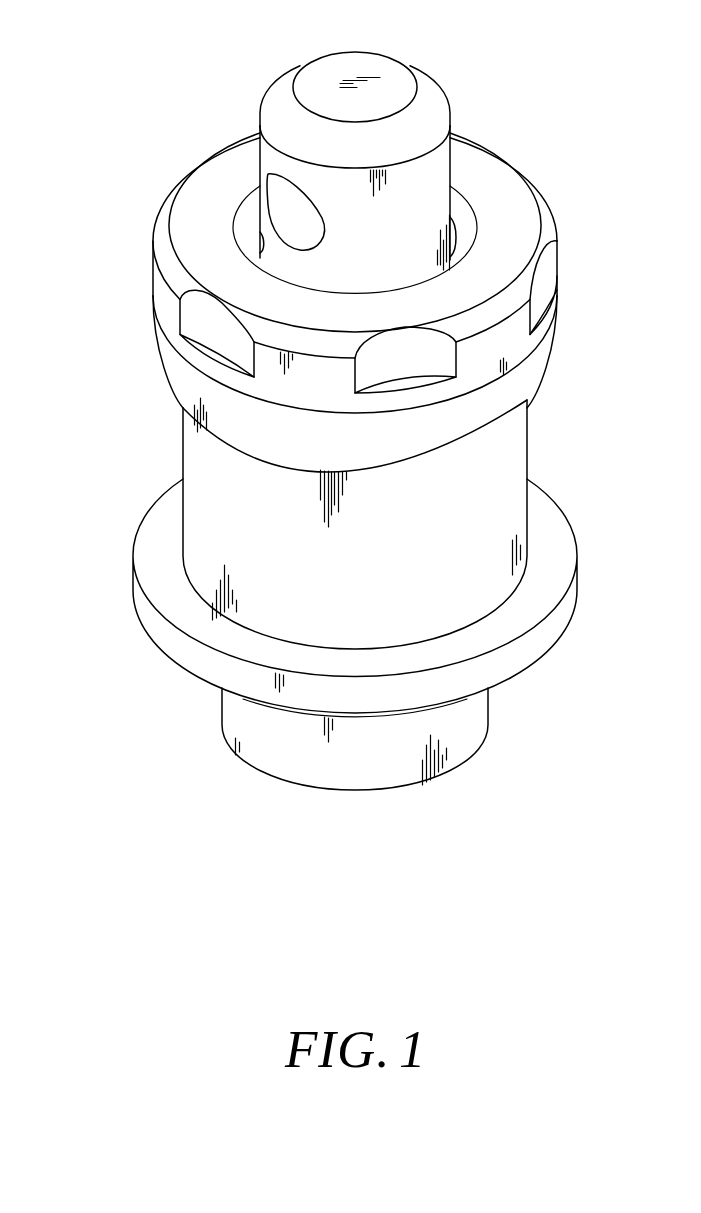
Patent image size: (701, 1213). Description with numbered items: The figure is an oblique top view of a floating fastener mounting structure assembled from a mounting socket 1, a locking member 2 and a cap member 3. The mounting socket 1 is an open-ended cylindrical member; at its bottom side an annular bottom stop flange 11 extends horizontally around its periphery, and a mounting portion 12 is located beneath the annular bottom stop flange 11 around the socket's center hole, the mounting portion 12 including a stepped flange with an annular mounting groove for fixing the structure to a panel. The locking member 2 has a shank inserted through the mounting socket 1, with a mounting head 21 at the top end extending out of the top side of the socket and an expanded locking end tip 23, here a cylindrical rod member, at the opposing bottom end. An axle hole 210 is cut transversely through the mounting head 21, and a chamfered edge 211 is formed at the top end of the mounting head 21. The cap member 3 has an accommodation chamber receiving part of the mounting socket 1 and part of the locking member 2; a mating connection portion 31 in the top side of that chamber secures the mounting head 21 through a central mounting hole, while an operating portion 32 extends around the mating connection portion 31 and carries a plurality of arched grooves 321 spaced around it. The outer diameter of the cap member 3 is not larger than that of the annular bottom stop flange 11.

The mounting socket 1 is at (311, 571).
The annular bottom stop flange 11 is at (168, 637).
The mounting portion 12 is at (162, 683).
The locking member 2 is at (315, 408).
The mounting head 21 is at (273, 204).
The axle hole 210 is at (283, 207).
The chamfered edge 211 is at (278, 104).
The expanded locking end tip 23 is at (455, 755).
The cap member 3 is at (390, 296).
The mating connection portion 31 is at (463, 228).
The operating portion 32 is at (390, 356).
The arched grooves 321 is at (548, 271).